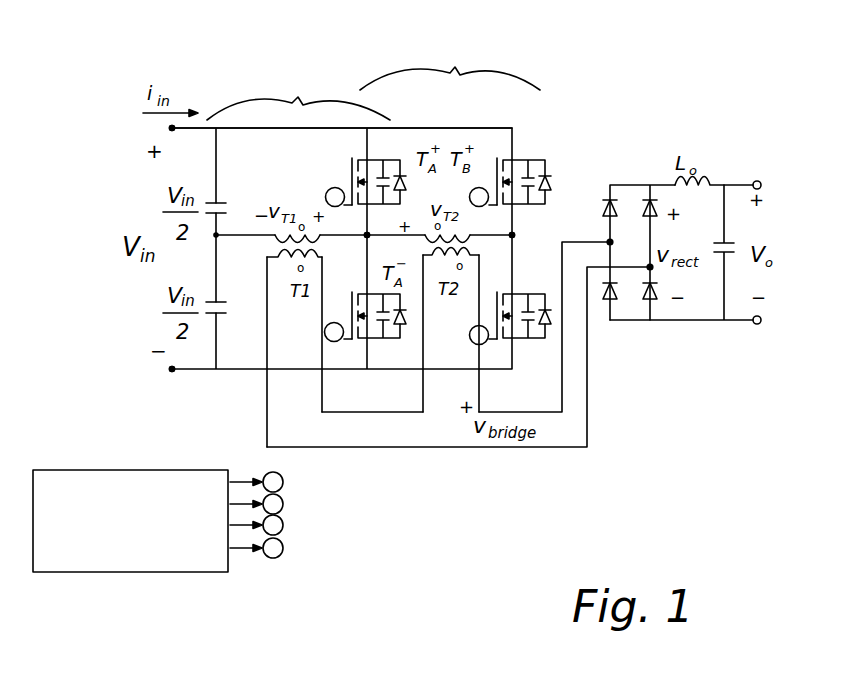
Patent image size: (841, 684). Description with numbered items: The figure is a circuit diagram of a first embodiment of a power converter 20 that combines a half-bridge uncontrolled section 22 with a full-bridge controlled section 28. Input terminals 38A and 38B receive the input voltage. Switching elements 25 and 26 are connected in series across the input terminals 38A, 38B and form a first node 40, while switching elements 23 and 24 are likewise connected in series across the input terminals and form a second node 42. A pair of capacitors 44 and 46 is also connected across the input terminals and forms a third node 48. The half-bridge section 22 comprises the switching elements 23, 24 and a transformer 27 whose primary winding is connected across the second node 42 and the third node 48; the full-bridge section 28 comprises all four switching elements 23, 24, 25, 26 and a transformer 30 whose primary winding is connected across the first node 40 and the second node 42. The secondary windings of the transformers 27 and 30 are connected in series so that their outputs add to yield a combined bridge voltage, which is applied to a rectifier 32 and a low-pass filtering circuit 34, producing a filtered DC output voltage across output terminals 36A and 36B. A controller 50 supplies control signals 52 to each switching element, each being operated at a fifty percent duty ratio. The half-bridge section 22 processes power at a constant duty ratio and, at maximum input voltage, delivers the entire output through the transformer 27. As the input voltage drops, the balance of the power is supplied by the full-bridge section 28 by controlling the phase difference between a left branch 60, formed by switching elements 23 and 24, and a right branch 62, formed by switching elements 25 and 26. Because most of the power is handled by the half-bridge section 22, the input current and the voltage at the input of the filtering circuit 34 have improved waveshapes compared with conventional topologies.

The converter 20 is at (138, 52).
The half-bridge uncontrolled section 22 is at (298, 96).
The switching element 23 is at (352, 161).
The switching element 24 is at (352, 293).
The switching element 25 is at (498, 160).
The switching element 26 is at (512, 302).
The transformer 27 is at (288, 257).
The full-bridge controlled section 28 is at (450, 67).
The transformer 30 is at (479, 253).
The rectifier 32 is at (638, 156).
The filtering circuit 34 is at (729, 151).
The output terminal 36A is at (760, 181).
The output terminal 36B is at (757, 324).
The input terminal 38A is at (170, 128).
The input terminal 38B is at (172, 369).
The first node 40 is at (515, 237).
The second node 42 is at (370, 234).
The capacitor 44 is at (216, 188).
The capacitor 46 is at (215, 274).
The third node 48 is at (216, 240).
The controller 50 is at (130, 521).
The control signals 52 is at (254, 572).
The left branch 60 is at (370, 390).
The right branch 62 is at (530, 124).